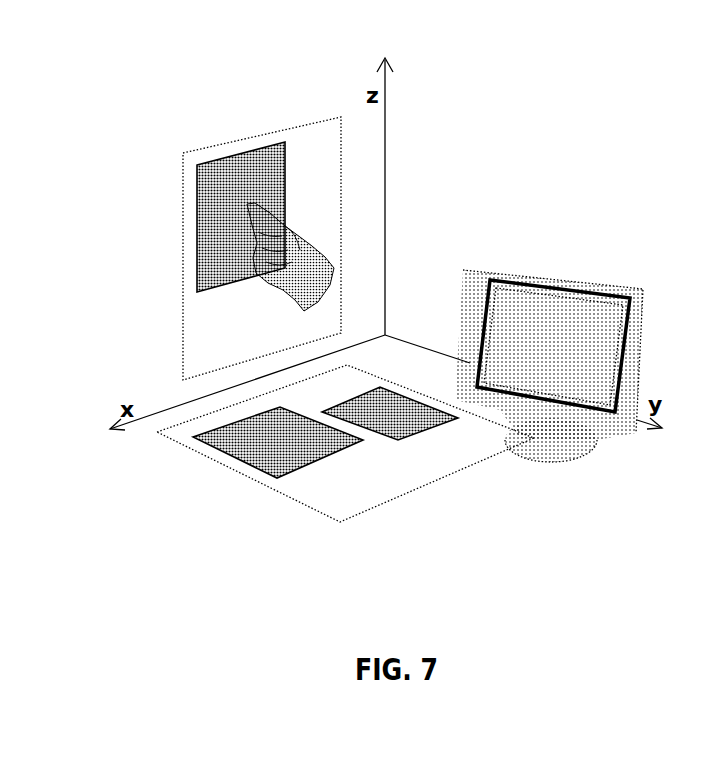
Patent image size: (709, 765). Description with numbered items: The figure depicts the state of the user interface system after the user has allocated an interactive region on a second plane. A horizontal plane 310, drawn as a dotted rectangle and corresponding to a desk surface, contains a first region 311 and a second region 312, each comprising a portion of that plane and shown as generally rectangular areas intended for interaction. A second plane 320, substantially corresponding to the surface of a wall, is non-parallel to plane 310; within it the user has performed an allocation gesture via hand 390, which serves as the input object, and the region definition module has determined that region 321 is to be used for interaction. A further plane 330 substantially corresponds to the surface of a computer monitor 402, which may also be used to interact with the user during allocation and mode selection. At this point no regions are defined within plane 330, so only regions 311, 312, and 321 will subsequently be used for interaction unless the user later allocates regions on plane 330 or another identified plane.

The plane 310 is at (200, 453).
The first region 311 is at (250, 457).
The second region 312 is at (388, 416).
The plane 320 is at (183, 298).
The region 321 is at (204, 214).
The plane 330 is at (553, 292).
The input object 390 is at (286, 285).
The computer monitor 402 is at (497, 312).